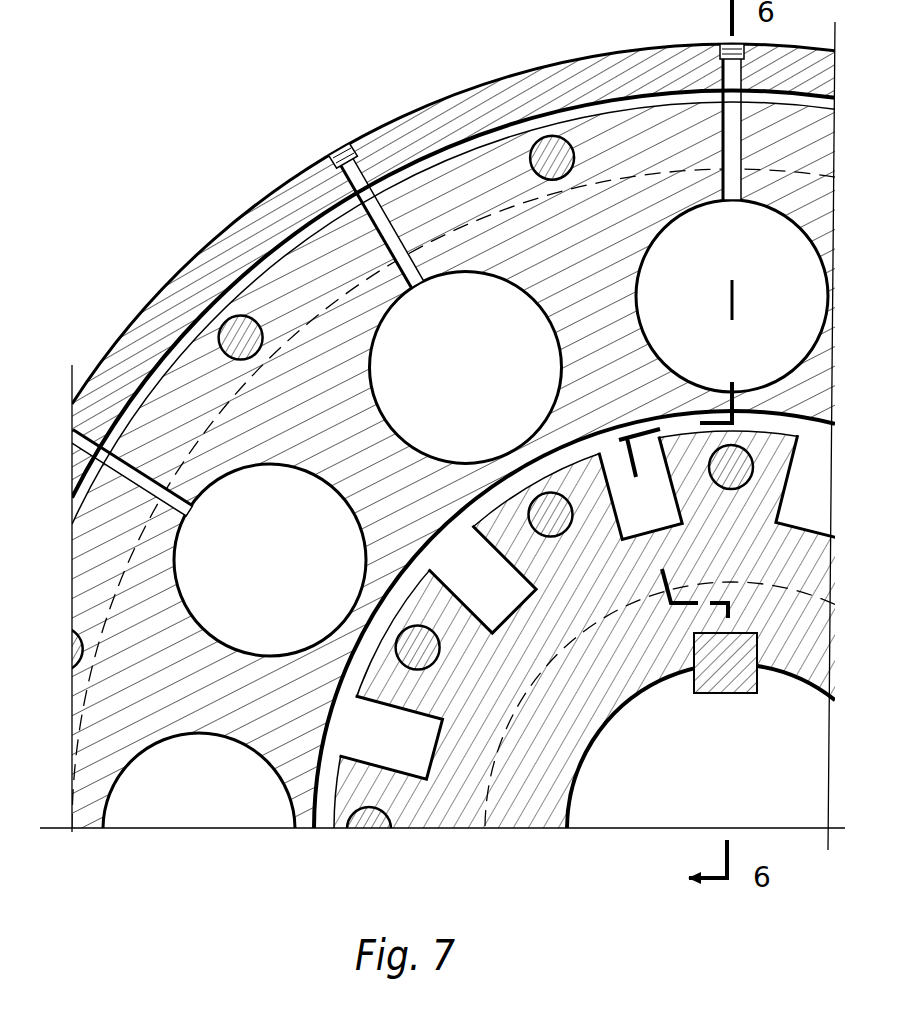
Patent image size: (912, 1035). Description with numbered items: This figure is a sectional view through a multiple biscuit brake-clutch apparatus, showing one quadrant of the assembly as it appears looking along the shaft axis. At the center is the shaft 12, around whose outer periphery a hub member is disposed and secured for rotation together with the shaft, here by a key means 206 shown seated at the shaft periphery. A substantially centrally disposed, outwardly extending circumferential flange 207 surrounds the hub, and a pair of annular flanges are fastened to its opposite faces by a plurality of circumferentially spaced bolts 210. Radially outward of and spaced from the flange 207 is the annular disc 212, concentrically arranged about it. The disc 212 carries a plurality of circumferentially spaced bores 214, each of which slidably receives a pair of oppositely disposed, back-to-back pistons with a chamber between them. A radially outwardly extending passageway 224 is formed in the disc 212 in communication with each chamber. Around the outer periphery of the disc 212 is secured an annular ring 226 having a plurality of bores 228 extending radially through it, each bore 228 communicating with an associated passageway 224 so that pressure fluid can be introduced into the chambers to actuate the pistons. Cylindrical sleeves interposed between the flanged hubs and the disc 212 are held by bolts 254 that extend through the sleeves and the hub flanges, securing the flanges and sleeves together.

The shaft 12 is at (701, 746).
The key means 206 is at (745, 693).
The circumferential flange 207 is at (530, 622).
The bolts 210 is at (417, 660).
The annular disc 212 is at (183, 378).
The bores 214 is at (328, 483).
The passageway 224 is at (375, 207).
The annular ring 226 is at (505, 97).
The bores 228 is at (348, 150).
The bolts 254 is at (232, 327).